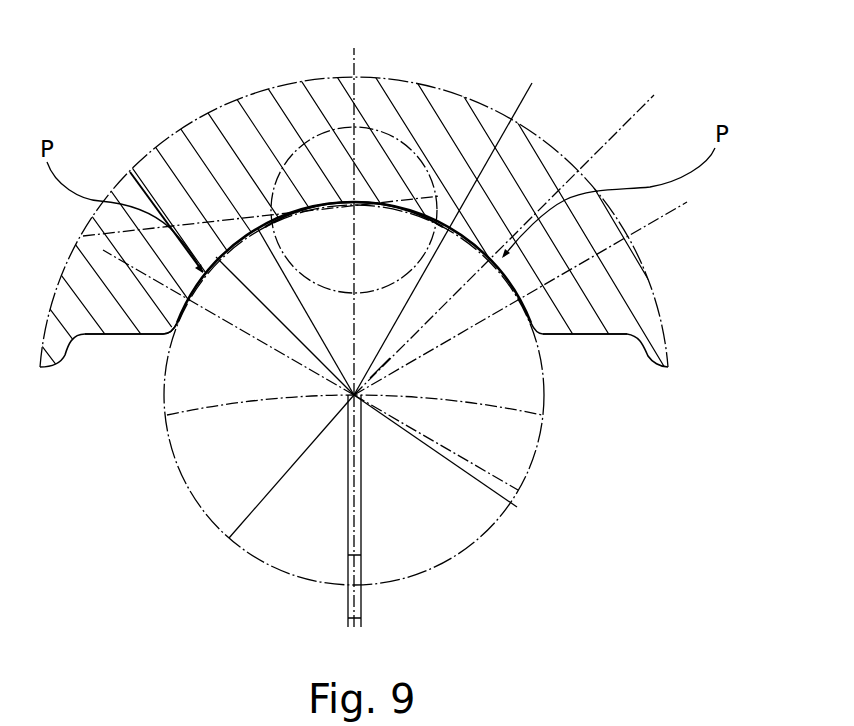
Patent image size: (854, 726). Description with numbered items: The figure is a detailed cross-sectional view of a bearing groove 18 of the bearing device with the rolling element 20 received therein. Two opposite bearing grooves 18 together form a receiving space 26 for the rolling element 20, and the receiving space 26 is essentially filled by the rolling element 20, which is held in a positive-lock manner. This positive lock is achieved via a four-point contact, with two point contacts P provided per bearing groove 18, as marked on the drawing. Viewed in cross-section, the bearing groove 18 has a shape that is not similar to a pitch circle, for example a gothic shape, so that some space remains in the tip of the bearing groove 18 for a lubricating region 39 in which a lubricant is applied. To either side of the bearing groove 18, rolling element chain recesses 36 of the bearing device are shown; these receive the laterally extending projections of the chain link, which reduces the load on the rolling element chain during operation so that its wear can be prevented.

The bearing groove 18 is at (243, 241).
The rolling element 20 is at (440, 532).
The receiving space 26 is at (166, 343).
The rolling element chain recess 36 is at (103, 342).
The lubricating region 39 is at (307, 198).